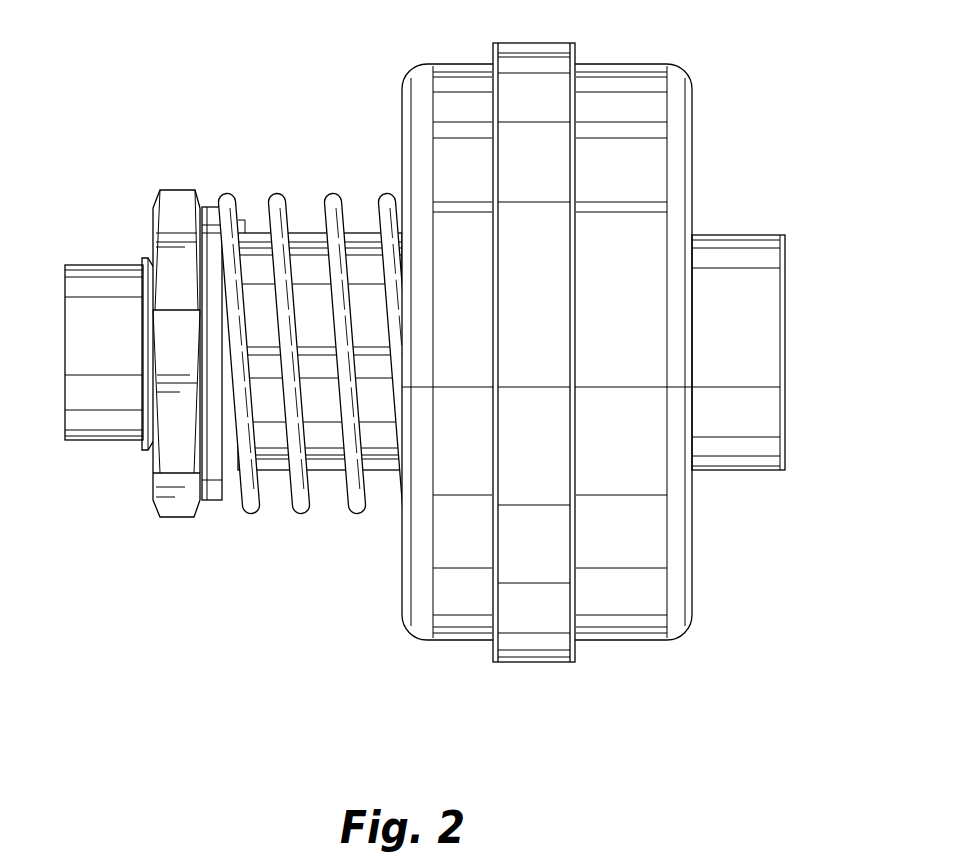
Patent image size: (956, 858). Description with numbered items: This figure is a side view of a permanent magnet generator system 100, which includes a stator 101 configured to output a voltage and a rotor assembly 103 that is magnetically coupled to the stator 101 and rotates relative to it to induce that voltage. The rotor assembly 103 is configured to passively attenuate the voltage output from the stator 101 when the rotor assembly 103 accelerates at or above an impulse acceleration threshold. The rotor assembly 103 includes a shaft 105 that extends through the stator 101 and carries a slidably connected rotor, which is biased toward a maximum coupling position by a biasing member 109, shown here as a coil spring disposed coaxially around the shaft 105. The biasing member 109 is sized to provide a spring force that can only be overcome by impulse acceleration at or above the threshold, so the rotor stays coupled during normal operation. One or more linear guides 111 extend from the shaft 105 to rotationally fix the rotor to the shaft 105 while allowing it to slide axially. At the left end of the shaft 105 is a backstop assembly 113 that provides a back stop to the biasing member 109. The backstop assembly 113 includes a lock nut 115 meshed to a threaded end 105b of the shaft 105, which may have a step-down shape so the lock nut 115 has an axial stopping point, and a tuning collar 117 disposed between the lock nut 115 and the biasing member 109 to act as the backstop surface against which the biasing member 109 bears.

The permanent magnet generator system 100 is at (847, 160).
The stator 101 is at (624, 85).
The rotor assembly 103 is at (313, 359).
The shaft 105 is at (754, 342).
The threaded end 105b is at (143, 278).
The biasing member 109 is at (333, 212).
The linear guide 111 is at (310, 240).
The backstop assembly 113 is at (146, 462).
The lock nut 115 is at (176, 218).
The tuning collar 117 is at (212, 222).